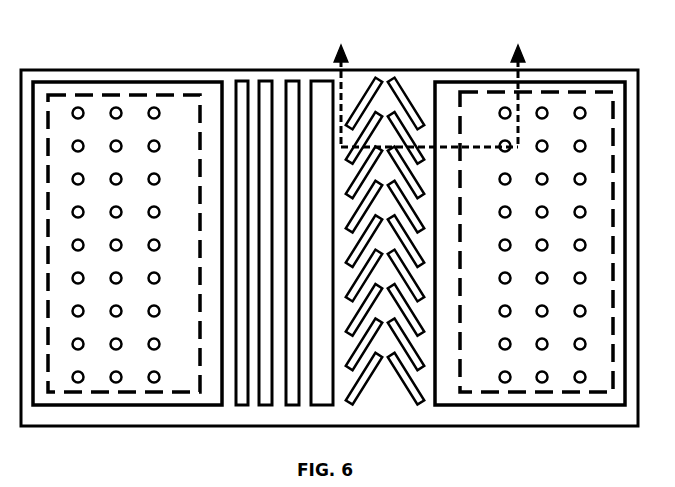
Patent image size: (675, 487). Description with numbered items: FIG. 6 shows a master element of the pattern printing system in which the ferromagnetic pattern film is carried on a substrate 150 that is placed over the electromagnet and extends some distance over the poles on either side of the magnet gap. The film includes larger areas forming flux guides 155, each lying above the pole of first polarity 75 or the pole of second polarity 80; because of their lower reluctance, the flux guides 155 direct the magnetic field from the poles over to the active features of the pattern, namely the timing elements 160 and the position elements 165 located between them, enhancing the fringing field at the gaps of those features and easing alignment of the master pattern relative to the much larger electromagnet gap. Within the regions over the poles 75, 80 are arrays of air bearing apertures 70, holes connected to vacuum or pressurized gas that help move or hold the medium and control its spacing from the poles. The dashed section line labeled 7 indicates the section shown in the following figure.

The substrate of master element 150 is at (122, 73).
The flux guide of pattern film 155 is at (208, 408).
The air bearing apertures 70 is at (78, 383).
The pole of first polarity, N 75 is at (146, 393).
The pole of second polarity, S 80 is at (535, 392).
The timing element of pattern film 160 is at (246, 80).
The position element of pattern film 165 is at (377, 75).
The section line 7- 7 is at (429, 89).